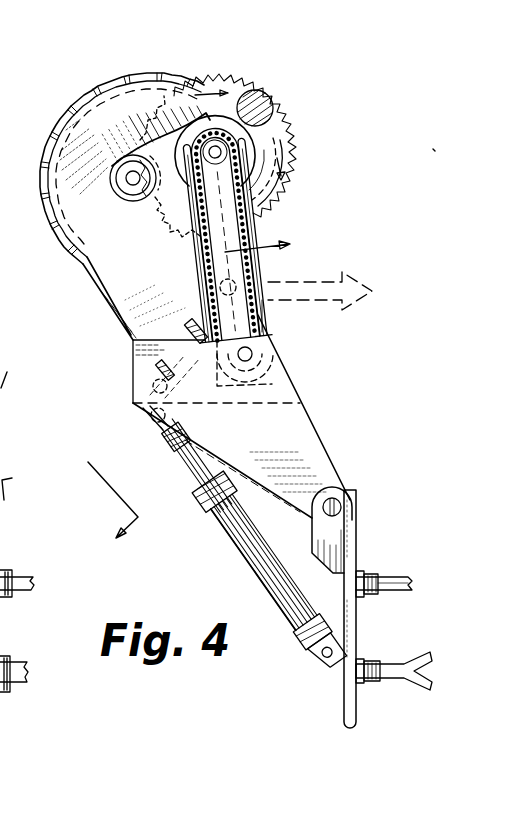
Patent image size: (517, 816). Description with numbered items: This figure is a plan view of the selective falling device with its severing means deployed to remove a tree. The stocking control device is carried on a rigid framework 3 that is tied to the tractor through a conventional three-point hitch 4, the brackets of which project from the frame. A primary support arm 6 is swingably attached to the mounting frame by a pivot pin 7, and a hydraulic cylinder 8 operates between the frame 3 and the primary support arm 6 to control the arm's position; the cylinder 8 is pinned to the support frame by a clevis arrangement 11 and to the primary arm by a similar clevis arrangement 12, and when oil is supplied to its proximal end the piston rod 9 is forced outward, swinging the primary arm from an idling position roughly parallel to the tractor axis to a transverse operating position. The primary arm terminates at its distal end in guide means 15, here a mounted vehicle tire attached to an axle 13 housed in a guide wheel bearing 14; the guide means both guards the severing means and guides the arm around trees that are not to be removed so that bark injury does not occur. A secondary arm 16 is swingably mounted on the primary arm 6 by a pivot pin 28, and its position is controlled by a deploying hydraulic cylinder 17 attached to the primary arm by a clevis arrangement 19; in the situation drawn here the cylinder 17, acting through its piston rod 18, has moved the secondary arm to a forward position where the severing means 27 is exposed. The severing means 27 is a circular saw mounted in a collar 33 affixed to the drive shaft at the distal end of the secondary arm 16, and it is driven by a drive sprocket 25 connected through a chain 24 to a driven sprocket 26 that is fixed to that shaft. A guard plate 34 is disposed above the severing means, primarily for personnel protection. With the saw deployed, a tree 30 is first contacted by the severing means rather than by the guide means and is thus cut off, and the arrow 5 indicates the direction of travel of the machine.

The rigid framework 3 is at (0, 546).
The three-point hitch 4 is at (207, 566).
The direction of travel arrow 5 is at (113, 512).
The primary support arm 6 is at (303, 432).
The pivot pin 7 is at (352, 502).
The hydraulic cylinder 8 is at (253, 553).
The piston rod 9 is at (192, 468).
The clevis arrangement 11 is at (326, 666).
The clevis arrangement 12 is at (150, 424).
The axle 13 is at (126, 178).
The guide wheel bearing 14 is at (132, 201).
The guide means 15 is at (52, 124).
The secondary arm 16 is at (262, 229).
The hydraulic cylinder 17 is at (131, 365).
The piston rod 18 is at (205, 320).
The clevis arrangement 19 is at (150, 388).
The chain 24 is at (255, 262).
The drive sprocket 25 is at (264, 330).
The driven sprocket 26 is at (197, 211).
The severing means 27 is at (268, 182).
The pivot pin 28 is at (252, 354).
The tree 30 is at (270, 112).
The collar 33 is at (250, 142).
The guard plate 34 is at (128, 106).